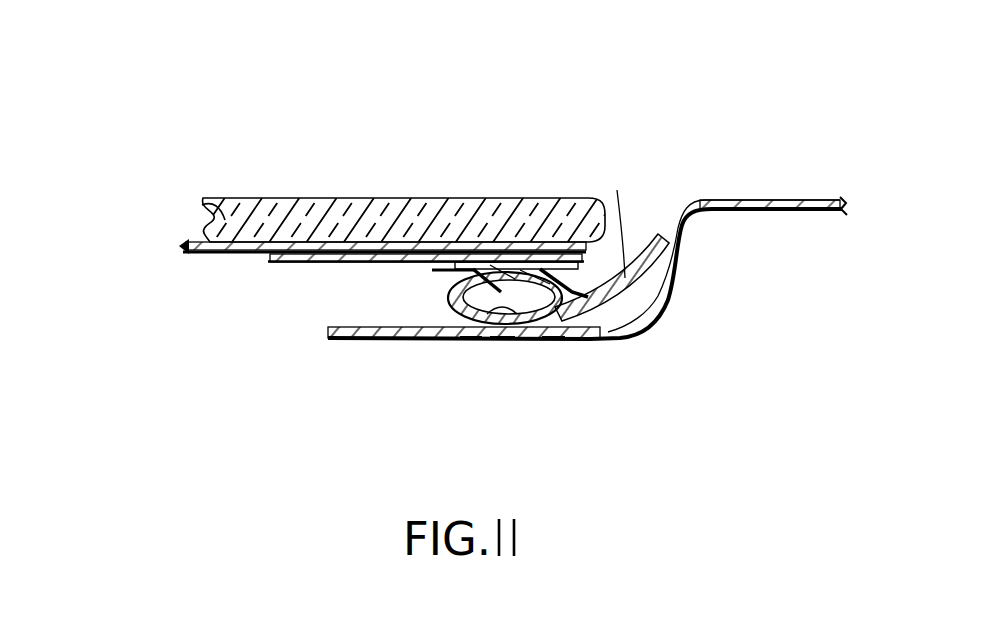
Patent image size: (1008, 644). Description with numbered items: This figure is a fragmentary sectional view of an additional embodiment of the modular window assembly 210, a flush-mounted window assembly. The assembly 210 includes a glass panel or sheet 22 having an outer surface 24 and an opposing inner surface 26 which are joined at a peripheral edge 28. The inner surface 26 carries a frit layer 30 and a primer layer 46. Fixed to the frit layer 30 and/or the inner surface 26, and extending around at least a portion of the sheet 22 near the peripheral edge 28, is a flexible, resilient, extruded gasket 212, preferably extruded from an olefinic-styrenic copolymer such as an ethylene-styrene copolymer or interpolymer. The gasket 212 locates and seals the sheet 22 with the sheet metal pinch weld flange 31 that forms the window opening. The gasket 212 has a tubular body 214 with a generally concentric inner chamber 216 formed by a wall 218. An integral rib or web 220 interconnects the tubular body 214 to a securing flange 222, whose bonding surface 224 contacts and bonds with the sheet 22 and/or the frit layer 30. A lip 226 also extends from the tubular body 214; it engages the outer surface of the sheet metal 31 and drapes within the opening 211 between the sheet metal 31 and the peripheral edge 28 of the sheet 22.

The glass panel or sheet 22 is at (202, 205).
The outer surface 24 is at (262, 198).
The inner surface 26 is at (220, 254).
The peripheral edge 28 is at (617, 190).
The frit layer 30 is at (253, 256).
The sheet metal pinch weld flange 31 is at (685, 200).
The primer layer 46 is at (303, 262).
The modular window assembly 210 is at (752, 378).
The opening 211 is at (636, 152).
The gasket 212 is at (434, 306).
The tubular body 214 is at (502, 362).
The inner chamber 216 is at (470, 338).
The wall 218 is at (553, 338).
The rib or web 220 is at (498, 270).
The securing flange 222 is at (434, 270).
The bonding surface 224 is at (456, 263).
The lip 226 is at (622, 268).